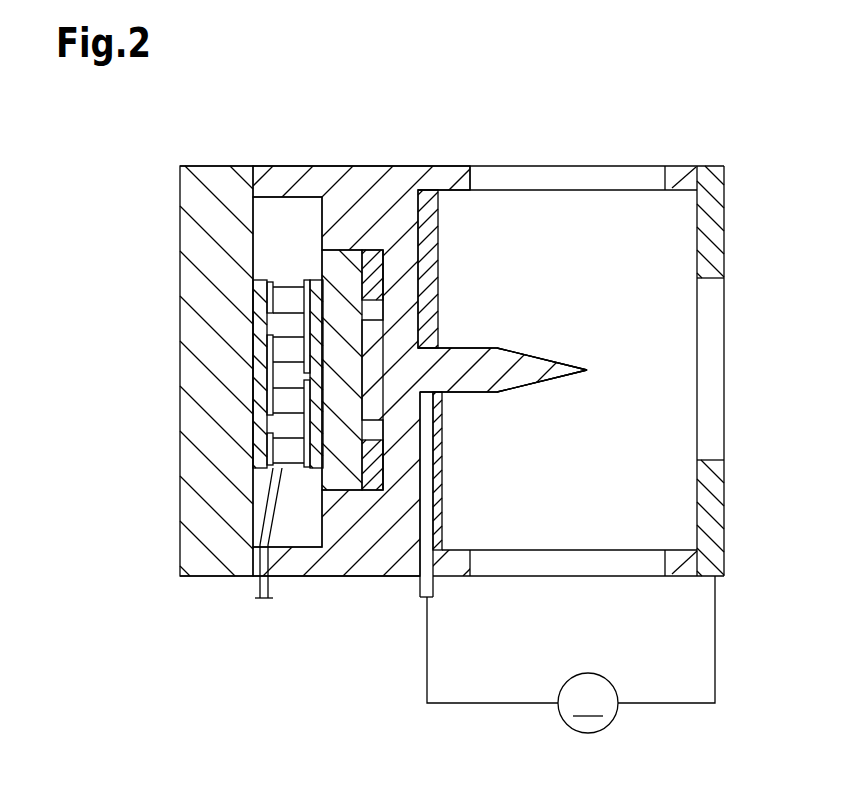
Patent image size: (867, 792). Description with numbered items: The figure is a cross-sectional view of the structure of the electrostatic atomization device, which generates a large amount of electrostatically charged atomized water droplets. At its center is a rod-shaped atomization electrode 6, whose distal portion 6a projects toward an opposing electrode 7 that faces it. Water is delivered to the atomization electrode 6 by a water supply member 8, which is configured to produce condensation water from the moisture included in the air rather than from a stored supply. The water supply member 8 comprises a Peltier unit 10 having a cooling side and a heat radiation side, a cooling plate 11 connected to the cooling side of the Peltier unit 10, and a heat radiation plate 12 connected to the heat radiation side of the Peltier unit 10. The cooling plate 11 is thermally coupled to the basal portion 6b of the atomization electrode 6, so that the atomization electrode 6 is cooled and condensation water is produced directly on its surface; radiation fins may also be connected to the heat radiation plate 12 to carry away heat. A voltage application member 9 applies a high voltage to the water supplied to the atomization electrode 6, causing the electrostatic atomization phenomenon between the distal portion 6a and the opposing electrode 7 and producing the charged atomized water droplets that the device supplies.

The atomization electrode 6 is at (485, 350).
The distal portion 6a is at (589, 371).
The basal portion 6b is at (397, 335).
The opposing electrode 7 is at (713, 318).
The water supply member 8 is at (280, 211).
The voltage application member 9 is at (618, 715).
The Peltier unit 10 is at (288, 467).
The cooling plate 11 is at (343, 270).
The heat radiation plate 12 is at (208, 182).